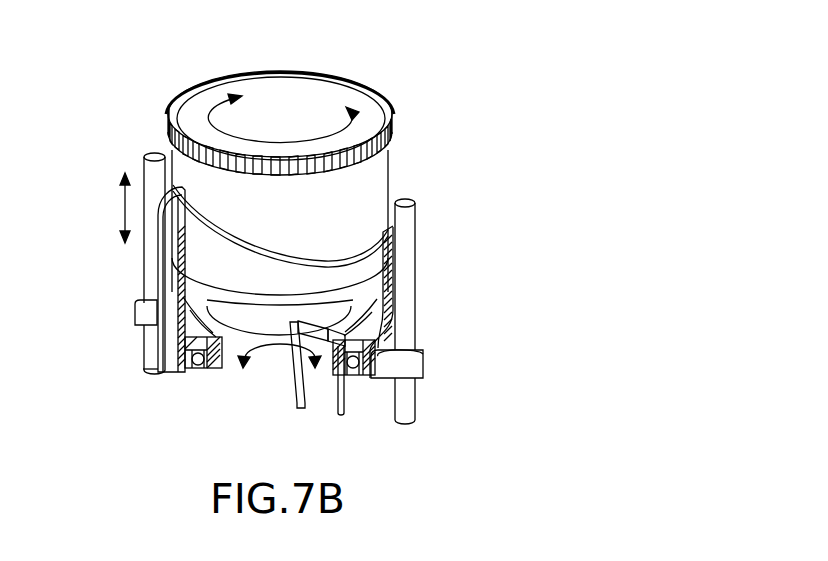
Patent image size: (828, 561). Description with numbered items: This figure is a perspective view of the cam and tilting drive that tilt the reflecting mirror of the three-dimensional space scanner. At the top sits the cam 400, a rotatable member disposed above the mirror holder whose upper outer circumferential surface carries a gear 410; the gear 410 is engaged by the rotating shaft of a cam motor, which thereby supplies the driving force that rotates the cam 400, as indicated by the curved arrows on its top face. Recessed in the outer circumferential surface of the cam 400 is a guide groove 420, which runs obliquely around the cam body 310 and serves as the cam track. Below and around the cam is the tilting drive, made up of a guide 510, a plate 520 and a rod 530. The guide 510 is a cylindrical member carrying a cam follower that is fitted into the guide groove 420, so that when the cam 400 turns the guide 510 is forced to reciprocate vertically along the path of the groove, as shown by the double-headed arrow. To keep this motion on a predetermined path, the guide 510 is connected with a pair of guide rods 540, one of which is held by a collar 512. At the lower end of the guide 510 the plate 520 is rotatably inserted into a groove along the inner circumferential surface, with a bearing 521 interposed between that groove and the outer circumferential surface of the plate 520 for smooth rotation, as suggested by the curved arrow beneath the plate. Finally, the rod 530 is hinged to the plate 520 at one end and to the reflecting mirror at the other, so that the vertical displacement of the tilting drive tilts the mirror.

The cam 400 is at (353, 97).
The gear 410 is at (386, 95).
The knob body 310 is at (389, 154).
The guide groove 420 is at (312, 260).
The guide 510 is at (165, 277).
The collar 512 is at (380, 353).
The plate 520 is at (217, 364).
The bearing 521 is at (197, 366).
The rod 530 is at (320, 394).
The guide rods 540 is at (412, 395).